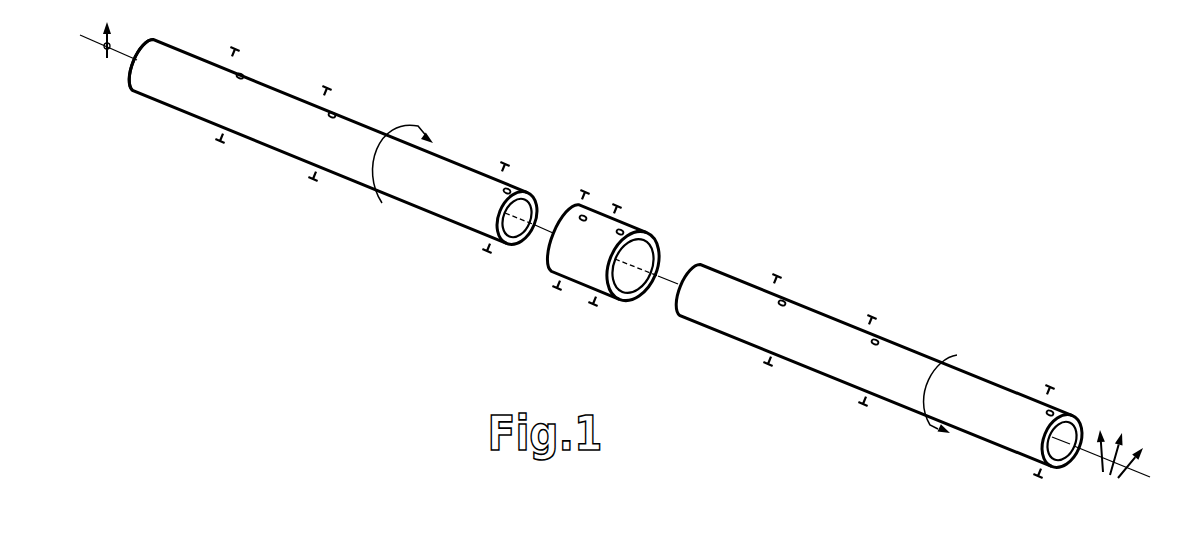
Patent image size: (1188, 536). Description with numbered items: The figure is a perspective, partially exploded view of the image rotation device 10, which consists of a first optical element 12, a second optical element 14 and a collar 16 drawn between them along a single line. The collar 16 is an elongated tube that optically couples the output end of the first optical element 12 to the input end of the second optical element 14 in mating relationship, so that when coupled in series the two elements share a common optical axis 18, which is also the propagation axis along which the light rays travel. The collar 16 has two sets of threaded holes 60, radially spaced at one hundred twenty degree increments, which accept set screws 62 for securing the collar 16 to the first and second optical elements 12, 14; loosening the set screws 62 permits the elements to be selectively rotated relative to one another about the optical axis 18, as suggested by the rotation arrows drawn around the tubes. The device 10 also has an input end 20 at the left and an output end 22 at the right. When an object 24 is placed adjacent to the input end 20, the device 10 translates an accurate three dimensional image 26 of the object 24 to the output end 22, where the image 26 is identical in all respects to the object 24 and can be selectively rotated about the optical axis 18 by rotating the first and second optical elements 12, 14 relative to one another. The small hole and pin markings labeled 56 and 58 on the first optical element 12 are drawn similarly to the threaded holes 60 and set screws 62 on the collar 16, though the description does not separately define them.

The image rotation device 10 is at (674, 150).
The first optical element 12 is at (295, 107).
The second optical element 14 is at (813, 318).
The collar 16 is at (583, 270).
The optical axis 18 is at (662, 282).
The input end 20 is at (133, 57).
The output end 22 is at (1076, 440).
The object 24 is at (102, 45).
The three dimensional image 26 is at (1121, 438).
The tube hole 56 is at (242, 73).
The fastener pin 58 is at (235, 46).
The threaded holes 60 is at (587, 212).
The set screws 62 is at (583, 200).